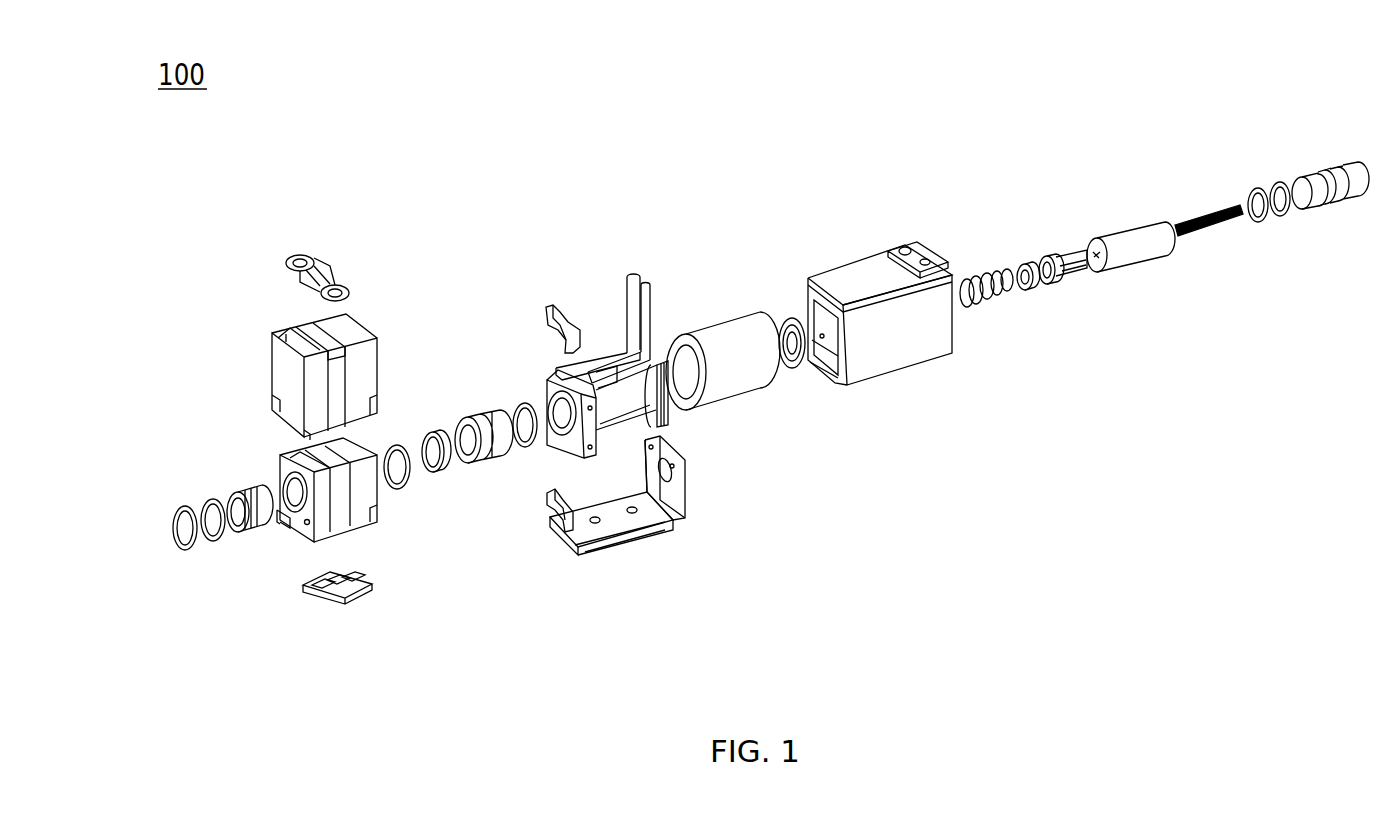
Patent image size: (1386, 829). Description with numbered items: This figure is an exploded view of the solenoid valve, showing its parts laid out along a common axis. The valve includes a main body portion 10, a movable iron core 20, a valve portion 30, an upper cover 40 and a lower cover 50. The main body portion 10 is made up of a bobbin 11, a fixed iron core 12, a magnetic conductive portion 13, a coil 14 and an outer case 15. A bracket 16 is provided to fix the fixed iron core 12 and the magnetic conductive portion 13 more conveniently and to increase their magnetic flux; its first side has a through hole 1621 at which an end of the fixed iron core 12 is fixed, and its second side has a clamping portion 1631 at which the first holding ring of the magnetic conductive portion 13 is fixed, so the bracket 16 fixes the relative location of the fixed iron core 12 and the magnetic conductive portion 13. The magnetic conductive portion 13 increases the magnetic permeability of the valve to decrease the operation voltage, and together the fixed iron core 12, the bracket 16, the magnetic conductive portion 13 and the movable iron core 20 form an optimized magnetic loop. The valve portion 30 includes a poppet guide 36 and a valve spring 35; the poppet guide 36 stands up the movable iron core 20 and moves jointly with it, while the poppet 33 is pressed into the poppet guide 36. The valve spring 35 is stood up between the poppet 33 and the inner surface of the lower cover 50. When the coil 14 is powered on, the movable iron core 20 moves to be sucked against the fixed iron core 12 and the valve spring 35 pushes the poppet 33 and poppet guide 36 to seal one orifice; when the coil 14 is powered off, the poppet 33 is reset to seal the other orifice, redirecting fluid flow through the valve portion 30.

The main body portion 10 is at (907, 325).
The bobbin 11 is at (665, 420).
The fixed iron core 12 is at (1352, 165).
The magnetic conductive portion 13 is at (490, 410).
The coil 14 is at (752, 370).
The outer case 15 is at (868, 262).
The bracket 16 is at (667, 522).
The through hole 1621 is at (668, 467).
The clamping portion 1631 is at (552, 525).
The movable iron core 20 is at (1135, 245).
The valve portion 30 is at (297, 488).
The poppet 33 is at (1022, 264).
The valve spring 35 is at (988, 296).
The poppet guide 36 is at (1072, 270).
The upper cover 40 is at (298, 383).
The lower cover 50 is at (265, 482).